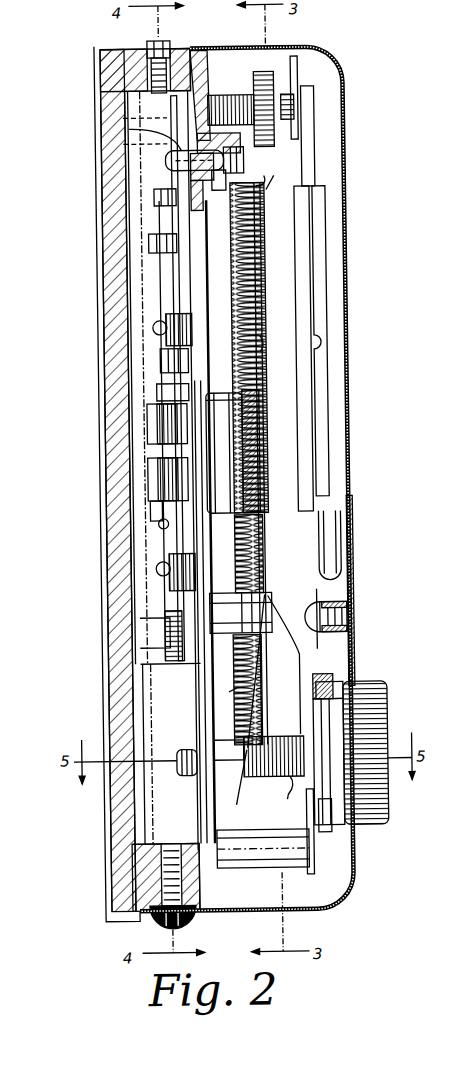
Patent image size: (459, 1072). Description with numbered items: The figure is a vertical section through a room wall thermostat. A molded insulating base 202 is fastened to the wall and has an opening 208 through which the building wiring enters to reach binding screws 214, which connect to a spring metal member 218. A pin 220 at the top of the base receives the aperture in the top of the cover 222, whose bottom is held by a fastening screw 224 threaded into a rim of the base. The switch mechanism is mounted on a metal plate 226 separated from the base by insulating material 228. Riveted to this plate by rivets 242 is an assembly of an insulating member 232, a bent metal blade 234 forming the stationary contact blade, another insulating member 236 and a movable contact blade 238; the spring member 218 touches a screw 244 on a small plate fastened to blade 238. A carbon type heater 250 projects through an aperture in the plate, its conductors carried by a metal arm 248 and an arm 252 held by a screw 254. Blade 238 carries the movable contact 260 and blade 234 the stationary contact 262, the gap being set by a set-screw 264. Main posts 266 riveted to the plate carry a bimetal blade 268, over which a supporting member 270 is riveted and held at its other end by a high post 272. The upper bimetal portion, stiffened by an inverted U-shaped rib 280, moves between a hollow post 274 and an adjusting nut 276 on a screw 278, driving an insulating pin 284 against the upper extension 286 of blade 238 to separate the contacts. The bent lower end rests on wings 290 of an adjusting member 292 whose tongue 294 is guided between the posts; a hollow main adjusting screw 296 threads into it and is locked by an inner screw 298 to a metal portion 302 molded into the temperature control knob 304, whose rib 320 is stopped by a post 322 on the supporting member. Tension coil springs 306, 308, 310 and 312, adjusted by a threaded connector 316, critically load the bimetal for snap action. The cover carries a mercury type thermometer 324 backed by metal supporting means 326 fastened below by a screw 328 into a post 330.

The base 202 is at (154, 508).
The opening 208 is at (122, 806).
The binding screws 214 is at (174, 522).
The spring metal member 218 is at (142, 541).
The pin 220 is at (162, 46).
The cover 222 is at (350, 105).
The fastening screw 224 is at (150, 922).
The metal plate 226 is at (198, 892).
The insulating material 228 is at (208, 60).
The insulating member 232 is at (163, 603).
The bent metal blade 234 is at (166, 290).
The insulating member 236 is at (172, 364).
The movable contact blade 238 is at (302, 74).
The rivets 242 is at (158, 328).
The screw 244 is at (158, 470).
The metal arm 248 is at (158, 521).
The carbon type heater 250 is at (240, 374).
The arm 252 is at (170, 392).
The screw 254 is at (152, 431).
The movable contact 260 is at (162, 197).
The stationary contact 262 is at (192, 204).
The set-screw 264 is at (160, 240).
The main posts 266 is at (257, 612).
The bimetal blade 268 is at (247, 575).
The supporting member 270 is at (274, 653).
The high post 272 is at (276, 840).
The hollow post 274 is at (270, 178).
The adjusting nut 276 is at (292, 68).
The screw 278 is at (252, 97).
The inverted U-shaped rib 280 is at (264, 262).
The insulating pin 284 is at (108, 126).
The upper extension 286 is at (108, 156).
The wings 290 is at (244, 750).
The adjusting member 292 is at (220, 740).
The tongue 294 is at (228, 690).
The main adjusting screw 296 is at (285, 777).
The screw 298 is at (178, 770).
The metal portion 302 is at (357, 687).
The temperature control knob 304 is at (374, 728).
The tension coil spring 306 is at (274, 188).
The tension coil spring 308 is at (224, 792).
The tension coil spring 310 is at (266, 342).
The tension coil spring 312 is at (255, 710).
The threaded connector 316 is at (254, 478).
The rib 320 is at (320, 830).
The post 322 is at (318, 682).
The mercury type thermometer 324 is at (340, 348).
The metal supporting means 326 is at (311, 408).
The screw 328 is at (343, 618).
The post 330 is at (348, 600).